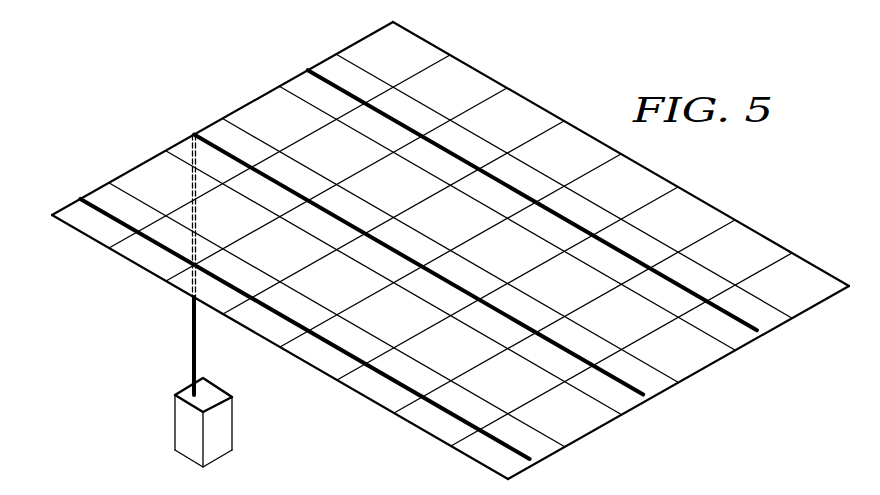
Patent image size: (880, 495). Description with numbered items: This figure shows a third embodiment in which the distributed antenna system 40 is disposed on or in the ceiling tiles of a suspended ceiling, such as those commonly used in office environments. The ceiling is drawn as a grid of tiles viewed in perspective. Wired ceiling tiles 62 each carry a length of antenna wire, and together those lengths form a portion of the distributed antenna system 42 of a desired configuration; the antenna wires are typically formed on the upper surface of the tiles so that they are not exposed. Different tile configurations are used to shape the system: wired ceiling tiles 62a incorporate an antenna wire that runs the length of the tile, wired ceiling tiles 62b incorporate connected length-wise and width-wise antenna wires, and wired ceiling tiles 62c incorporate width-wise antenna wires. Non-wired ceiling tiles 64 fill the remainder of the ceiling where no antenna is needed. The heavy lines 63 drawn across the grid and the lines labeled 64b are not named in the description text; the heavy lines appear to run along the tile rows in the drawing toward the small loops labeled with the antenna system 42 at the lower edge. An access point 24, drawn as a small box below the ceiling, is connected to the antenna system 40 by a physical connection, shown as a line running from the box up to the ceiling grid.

The distributed antenna system 40 is at (128, 77).
The wired ceiling tiles 62 is at (322, 181).
The wired ceiling tiles with length-wise antenna wire 62a is at (376, 390).
The wired ceiling tiles with length-wise and width-wise antenna wires 62b is at (297, 82).
The wired ceiling tiles with width-wise antenna wires 62c is at (258, 103).
The cables 63 is at (215, 147).
The non-wired ceiling tiles 64 is at (209, 228).
The panel border lines 64b is at (328, 243).
The distributed antenna system 42 is at (522, 460).
The access point 24 is at (182, 420).